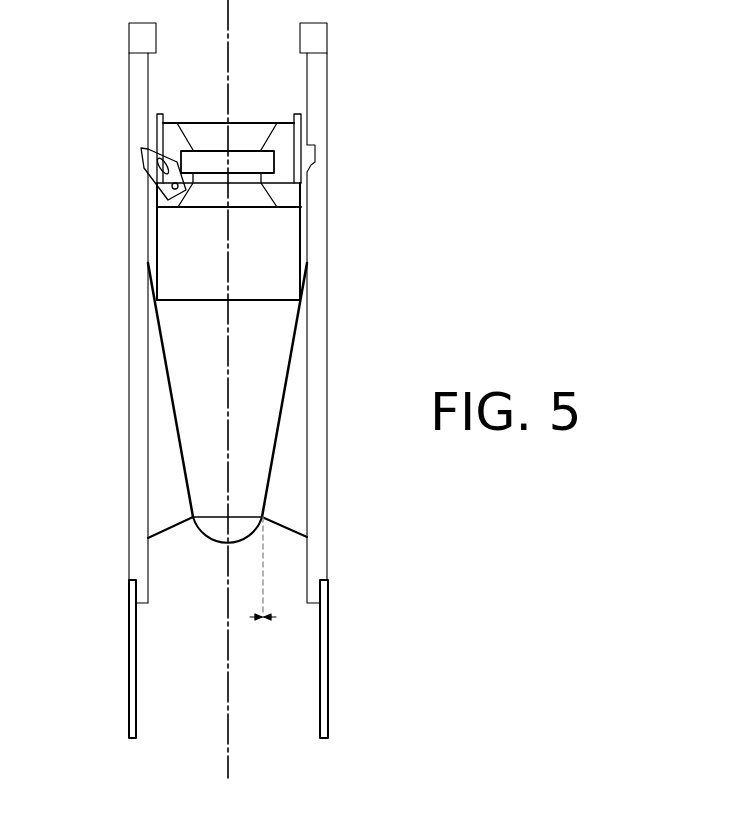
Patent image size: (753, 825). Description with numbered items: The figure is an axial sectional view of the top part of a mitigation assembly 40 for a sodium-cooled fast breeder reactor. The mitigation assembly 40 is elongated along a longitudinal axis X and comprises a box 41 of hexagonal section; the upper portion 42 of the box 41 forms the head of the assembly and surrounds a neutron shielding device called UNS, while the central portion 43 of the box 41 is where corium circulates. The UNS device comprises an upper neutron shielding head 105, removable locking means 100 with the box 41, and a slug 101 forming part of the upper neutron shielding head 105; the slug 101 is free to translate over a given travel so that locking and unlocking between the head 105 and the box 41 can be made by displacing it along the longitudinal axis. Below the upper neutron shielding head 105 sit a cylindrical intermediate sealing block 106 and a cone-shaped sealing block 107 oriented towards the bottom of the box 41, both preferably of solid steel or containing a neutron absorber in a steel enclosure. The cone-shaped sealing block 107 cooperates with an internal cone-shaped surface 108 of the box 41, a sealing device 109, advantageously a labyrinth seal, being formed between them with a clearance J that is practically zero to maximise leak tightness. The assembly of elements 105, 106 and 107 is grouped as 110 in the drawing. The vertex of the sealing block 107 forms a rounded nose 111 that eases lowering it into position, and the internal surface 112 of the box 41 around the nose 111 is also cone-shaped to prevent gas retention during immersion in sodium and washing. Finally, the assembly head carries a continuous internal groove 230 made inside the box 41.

The mitigation assembly 40 is at (119, 466).
The box 41 is at (323, 648).
The upper portion 42 is at (318, 72).
The central portion 43 is at (133, 677).
The removable locking means 100 is at (123, 194).
The slug 101 is at (175, 138).
The upper neutron shielding head 105 is at (249, 157).
The intermediate sealing block 106 is at (283, 257).
The cone-shaped sealing block 107 is at (290, 309).
The internal cone-shaped surface 108 is at (273, 471).
The sealing device 109 is at (297, 347).
The housing assembly 110 is at (279, 219).
The nose 111 is at (206, 533).
The internal surface 112 is at (288, 532).
The continuous internal groove 230 is at (140, 150).
The neutron shielding device UNS is at (312, 135).
The clearance J is at (263, 583).
The longitudinal axis X is at (227, 768).